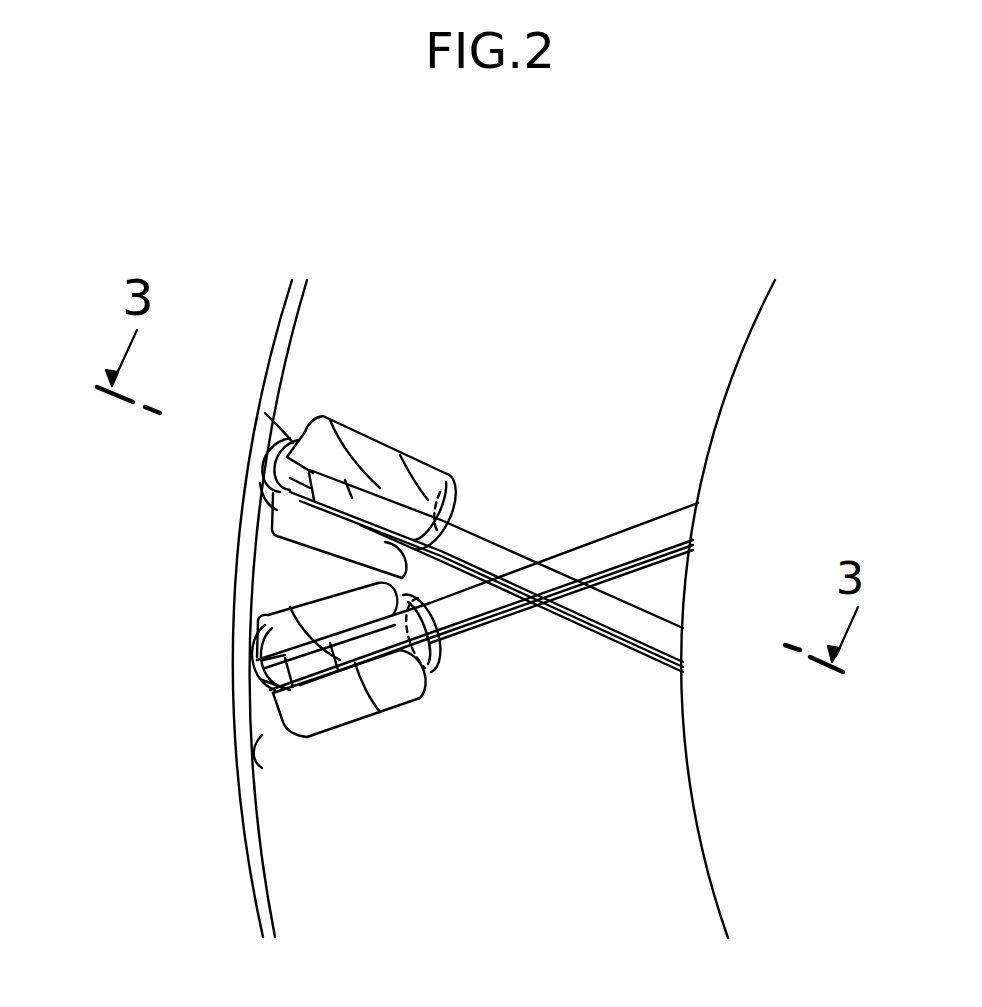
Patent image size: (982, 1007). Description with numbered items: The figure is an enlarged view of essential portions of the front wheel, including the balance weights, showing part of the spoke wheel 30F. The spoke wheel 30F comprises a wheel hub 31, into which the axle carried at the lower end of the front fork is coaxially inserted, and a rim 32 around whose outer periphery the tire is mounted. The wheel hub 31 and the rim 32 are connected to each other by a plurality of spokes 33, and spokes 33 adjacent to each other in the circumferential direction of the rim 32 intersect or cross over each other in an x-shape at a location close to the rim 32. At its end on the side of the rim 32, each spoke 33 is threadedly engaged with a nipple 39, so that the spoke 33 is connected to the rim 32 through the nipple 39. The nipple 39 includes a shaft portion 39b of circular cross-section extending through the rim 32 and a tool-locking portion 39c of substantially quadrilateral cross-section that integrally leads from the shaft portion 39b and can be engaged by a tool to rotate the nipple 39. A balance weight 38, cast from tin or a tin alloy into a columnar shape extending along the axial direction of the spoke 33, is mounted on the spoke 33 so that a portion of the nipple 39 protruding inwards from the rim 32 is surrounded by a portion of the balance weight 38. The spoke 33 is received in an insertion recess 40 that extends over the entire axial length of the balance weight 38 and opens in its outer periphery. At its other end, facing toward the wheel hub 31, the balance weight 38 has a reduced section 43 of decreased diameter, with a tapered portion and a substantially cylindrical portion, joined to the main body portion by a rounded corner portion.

The spoke wheel 30F is at (240, 849).
The wheel hub 31 is at (717, 809).
The rim 32 is at (230, 808).
The spoke 33 is at (597, 548).
The balance weight 38 is at (368, 447).
The nipple 39 is at (306, 467).
The shaft portion 39b is at (280, 468).
The tool-locking portion 39c is at (332, 490).
The insertion recess 40 is at (355, 493).
The reduced section 43 is at (428, 484).